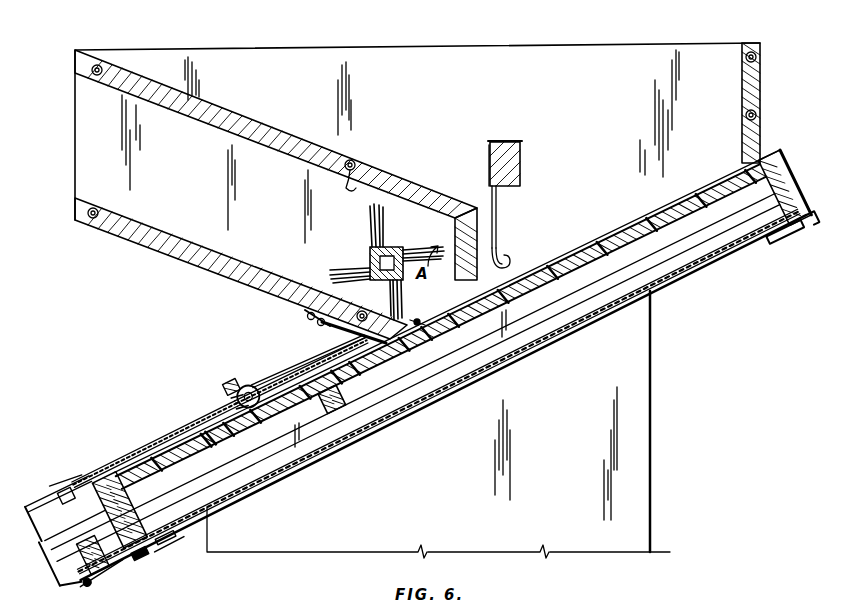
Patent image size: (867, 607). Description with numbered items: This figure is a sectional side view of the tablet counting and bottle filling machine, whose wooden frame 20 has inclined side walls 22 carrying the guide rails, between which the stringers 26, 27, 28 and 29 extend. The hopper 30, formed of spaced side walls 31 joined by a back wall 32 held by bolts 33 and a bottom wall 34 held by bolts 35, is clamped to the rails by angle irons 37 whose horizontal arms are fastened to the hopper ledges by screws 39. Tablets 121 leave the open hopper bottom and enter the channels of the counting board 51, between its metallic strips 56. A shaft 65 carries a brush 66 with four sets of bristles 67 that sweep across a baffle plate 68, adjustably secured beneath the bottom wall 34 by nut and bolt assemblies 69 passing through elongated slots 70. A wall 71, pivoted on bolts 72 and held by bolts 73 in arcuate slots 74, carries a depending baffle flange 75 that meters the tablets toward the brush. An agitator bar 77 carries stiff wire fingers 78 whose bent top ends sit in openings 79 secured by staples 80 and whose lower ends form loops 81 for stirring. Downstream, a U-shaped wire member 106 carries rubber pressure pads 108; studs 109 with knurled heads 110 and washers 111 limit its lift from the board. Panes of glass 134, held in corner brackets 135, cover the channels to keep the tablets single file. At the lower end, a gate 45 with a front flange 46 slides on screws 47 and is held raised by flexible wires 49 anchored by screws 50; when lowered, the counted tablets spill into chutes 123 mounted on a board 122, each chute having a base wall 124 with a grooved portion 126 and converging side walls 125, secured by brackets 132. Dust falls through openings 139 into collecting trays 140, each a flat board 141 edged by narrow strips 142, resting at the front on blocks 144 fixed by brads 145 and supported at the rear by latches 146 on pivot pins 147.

The frame 20 is at (671, 407).
The side walls 22 is at (637, 464).
The stringer 26 is at (114, 563).
The stringer 27 is at (152, 490).
The stringer 28 is at (340, 416).
The stringer 29 is at (778, 201).
The hopper 30 is at (212, 296).
The side walls 31 is at (716, 82).
The back wall 32 is at (742, 98).
The bolts 33 is at (762, 58).
The bottom wall 34 is at (163, 232).
The bolts 35 is at (92, 218).
The angle irons 37 is at (362, 368).
The screws 39 is at (447, 331).
The gate 45 is at (141, 510).
The front flange 46 is at (130, 554).
The screws 47 is at (110, 517).
The flexible wires 49 is at (125, 567).
The screws 50 is at (86, 589).
The counting board 51 is at (540, 303).
The metallic strips 56 is at (605, 236).
The shaft 65 is at (368, 262).
The brush 66 is at (376, 250).
The bristles 67 is at (384, 222).
The baffle plate 68 is at (421, 321).
The nut and bolt assemblies 69 is at (307, 315).
The elongated slots 70 is at (320, 326).
The wall 71 is at (215, 118).
The bolts 72 is at (96, 75).
The bolts 73 is at (353, 162).
The elongated slots 74 is at (347, 189).
The baffle flange 75 is at (458, 233).
The bar 77 is at (486, 148).
The fingers 78 is at (498, 210).
The openings 79 is at (495, 140).
The staples 80 is at (490, 164).
The loops 81 is at (507, 261).
The U-shaped member 106 is at (215, 410).
The pressure pads 108 is at (245, 385).
The studs 109 is at (238, 402).
The knurled heads 110 is at (228, 382).
The washers 111 is at (232, 392).
The tablets 121 is at (232, 438).
The board 122 is at (43, 566).
The chutes 123 is at (44, 490).
The base wall 124 is at (72, 483).
The side walls 125 is at (48, 505).
The grooved portion 126 is at (67, 582).
The brackets 132 is at (68, 488).
The panes of glass 134 is at (302, 372).
The corner brackets 135 is at (262, 380).
The openings 139 is at (655, 226).
The collecting trays 140 is at (565, 347).
The flat board 141 is at (673, 284).
The narrow strips 142 is at (598, 308).
The block 144 is at (166, 536).
The brads 145 is at (160, 548).
The latches 146 is at (768, 244).
The pivot pins 147 is at (800, 233).